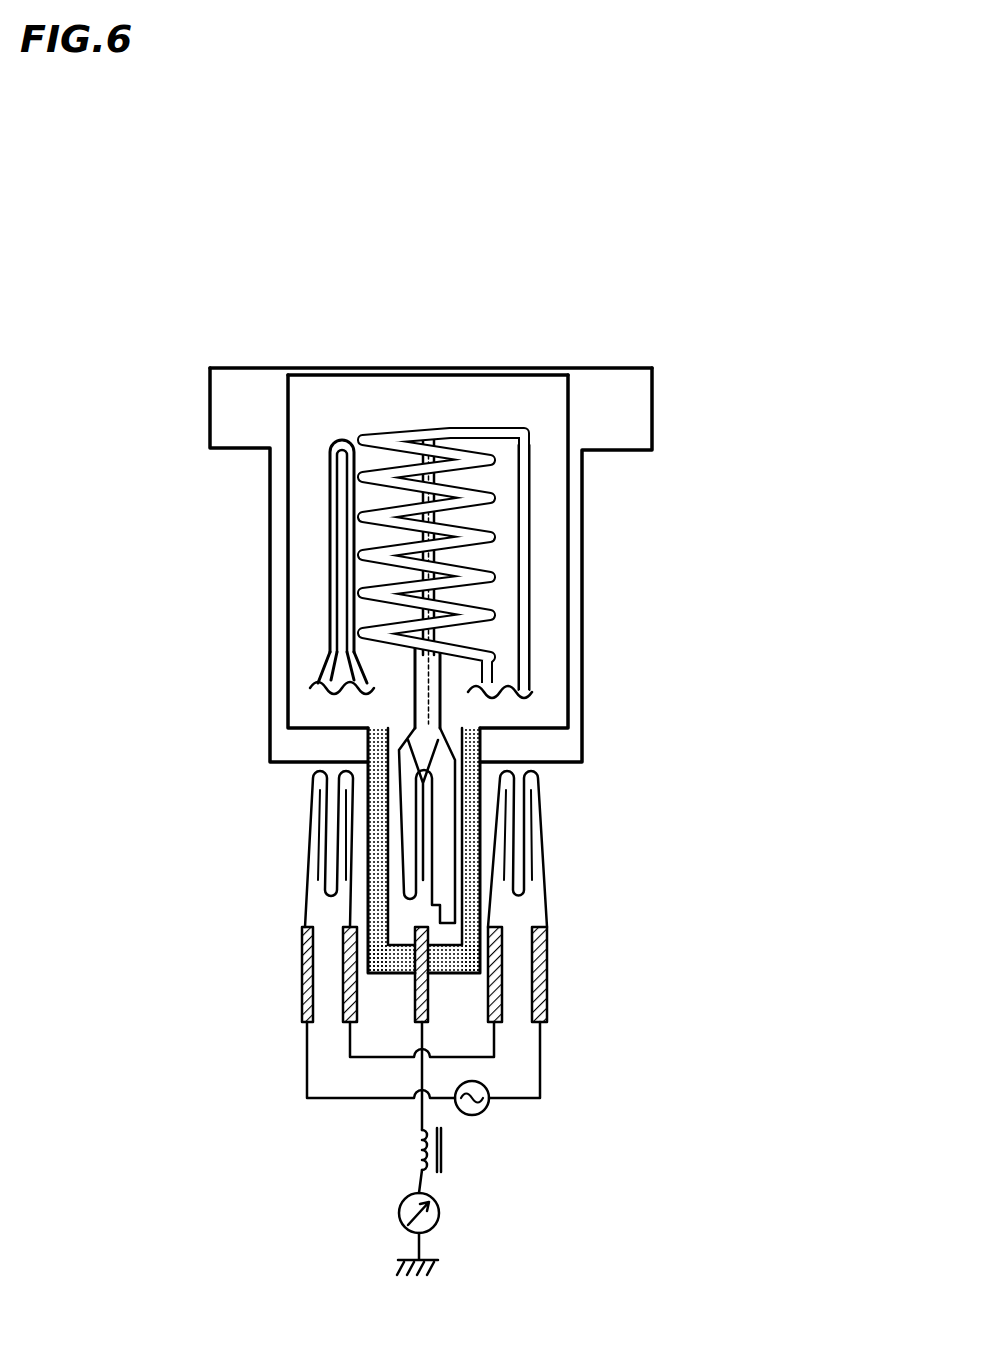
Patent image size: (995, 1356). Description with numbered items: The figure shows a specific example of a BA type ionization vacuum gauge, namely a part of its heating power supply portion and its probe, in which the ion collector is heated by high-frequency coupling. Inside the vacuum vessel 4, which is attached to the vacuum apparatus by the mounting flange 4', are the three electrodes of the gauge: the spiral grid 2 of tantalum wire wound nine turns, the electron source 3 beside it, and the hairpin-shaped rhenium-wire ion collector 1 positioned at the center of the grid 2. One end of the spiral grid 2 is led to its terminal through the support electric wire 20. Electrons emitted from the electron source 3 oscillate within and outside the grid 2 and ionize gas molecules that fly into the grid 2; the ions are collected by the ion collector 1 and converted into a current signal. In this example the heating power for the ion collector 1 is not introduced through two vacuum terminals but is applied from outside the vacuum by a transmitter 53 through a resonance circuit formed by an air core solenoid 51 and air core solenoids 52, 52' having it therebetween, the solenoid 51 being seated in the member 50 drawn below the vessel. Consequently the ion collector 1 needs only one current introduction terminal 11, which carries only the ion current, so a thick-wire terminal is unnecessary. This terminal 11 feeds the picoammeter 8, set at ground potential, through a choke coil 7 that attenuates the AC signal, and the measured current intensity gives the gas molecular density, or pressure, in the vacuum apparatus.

The ion collector 1 is at (485, 470).
The grid 2 is at (398, 440).
The electron source 3 is at (337, 533).
The vacuum vessel 4 is at (479, 565).
The mounting flange 4' is at (472, 387).
The support electric wire 20 is at (530, 600).
The insulating member 50 is at (490, 758).
The air core solenoid 51 is at (395, 787).
The air core solenoid 52 is at (254, 896).
The air core solenoid 52' is at (580, 896).
The current introduction terminal 11 is at (428, 993).
The transmitter 53 is at (488, 1115).
The choke coil 7 is at (445, 1153).
The picoammeter 8 is at (400, 1208).